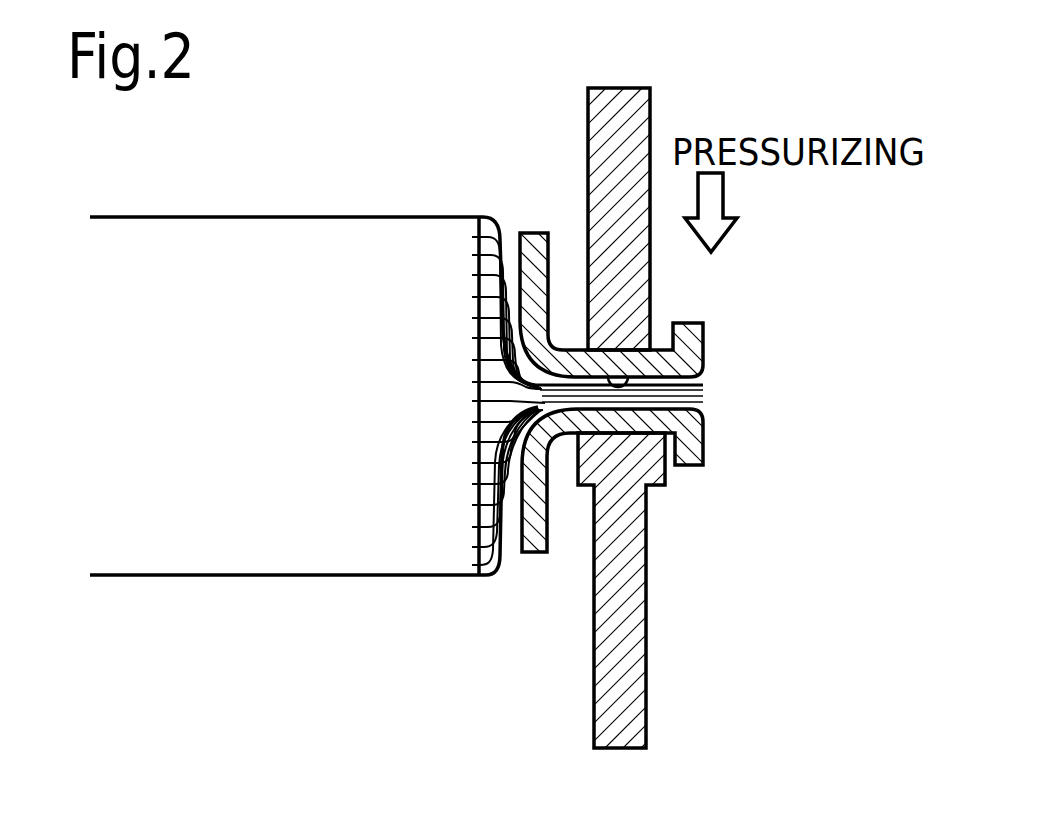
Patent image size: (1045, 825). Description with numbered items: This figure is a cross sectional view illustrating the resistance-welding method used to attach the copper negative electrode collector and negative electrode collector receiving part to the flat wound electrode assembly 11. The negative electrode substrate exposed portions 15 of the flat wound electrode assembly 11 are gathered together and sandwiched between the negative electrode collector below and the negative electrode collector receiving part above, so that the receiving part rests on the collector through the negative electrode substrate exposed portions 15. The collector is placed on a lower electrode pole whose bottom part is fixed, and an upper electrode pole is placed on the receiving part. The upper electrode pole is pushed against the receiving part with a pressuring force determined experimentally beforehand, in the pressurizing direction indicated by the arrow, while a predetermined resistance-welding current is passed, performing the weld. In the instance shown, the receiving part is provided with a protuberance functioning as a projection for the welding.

The flat wound electrode assembly 11 is at (192, 548).
The negative electrode substrate exposed portions 15 is at (492, 225).